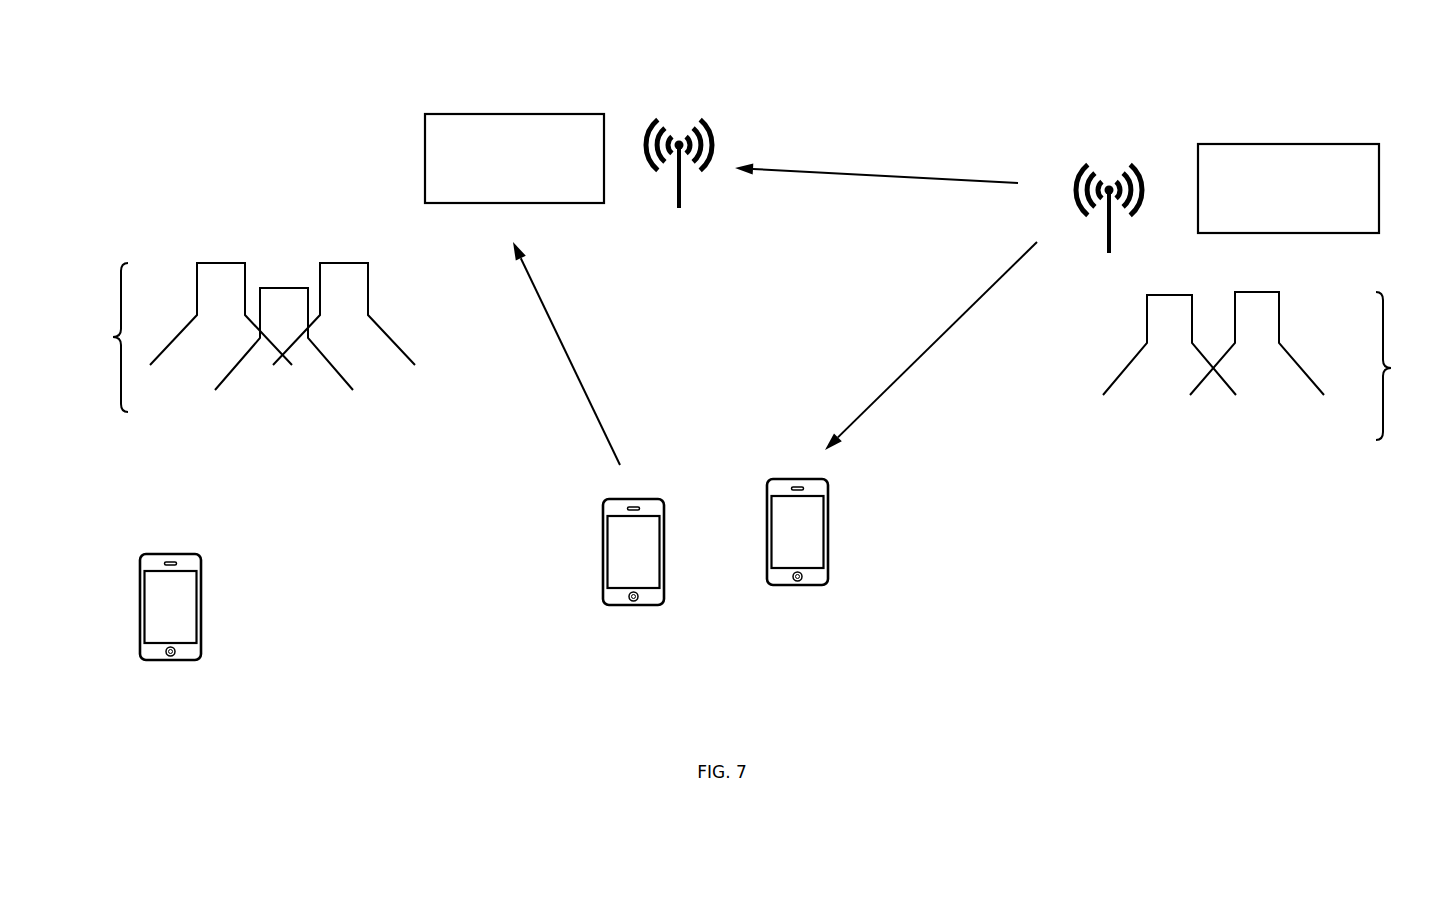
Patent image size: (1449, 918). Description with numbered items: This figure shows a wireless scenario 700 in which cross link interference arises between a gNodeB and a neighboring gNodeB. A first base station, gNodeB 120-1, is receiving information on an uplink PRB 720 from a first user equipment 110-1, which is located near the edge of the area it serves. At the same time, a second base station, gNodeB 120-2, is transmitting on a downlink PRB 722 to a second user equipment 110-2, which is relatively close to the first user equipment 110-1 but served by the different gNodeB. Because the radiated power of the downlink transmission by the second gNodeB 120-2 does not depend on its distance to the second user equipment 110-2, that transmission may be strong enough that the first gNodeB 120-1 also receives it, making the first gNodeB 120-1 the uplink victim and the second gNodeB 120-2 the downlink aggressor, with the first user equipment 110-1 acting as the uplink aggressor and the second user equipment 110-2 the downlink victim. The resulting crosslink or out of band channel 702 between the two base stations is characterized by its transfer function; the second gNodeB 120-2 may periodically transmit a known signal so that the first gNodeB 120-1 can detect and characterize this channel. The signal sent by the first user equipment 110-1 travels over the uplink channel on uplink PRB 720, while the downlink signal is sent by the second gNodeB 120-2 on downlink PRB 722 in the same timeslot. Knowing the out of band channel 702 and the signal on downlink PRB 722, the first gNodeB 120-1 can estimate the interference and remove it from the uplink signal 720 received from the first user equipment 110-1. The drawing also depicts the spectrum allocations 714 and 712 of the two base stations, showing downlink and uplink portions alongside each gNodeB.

The wireless communication system 700 is at (730, 35).
The gNodeB 1 120-1 is at (526, 161).
The gNodeB 2 120-2 is at (1254, 198).
The out of band channel 702 is at (876, 153).
The uplink PRB 720 is at (571, 353).
The downlink PRB 722 is at (931, 346).
The spectrum of gNodeB 1 (DL/UL/DL) 714 is at (241, 337).
The spectrum of gNodeB 2 (DL/DL) 712 is at (1269, 366).
The UE1 110-1 is at (567, 552).
The UE2 110-2 is at (854, 530).